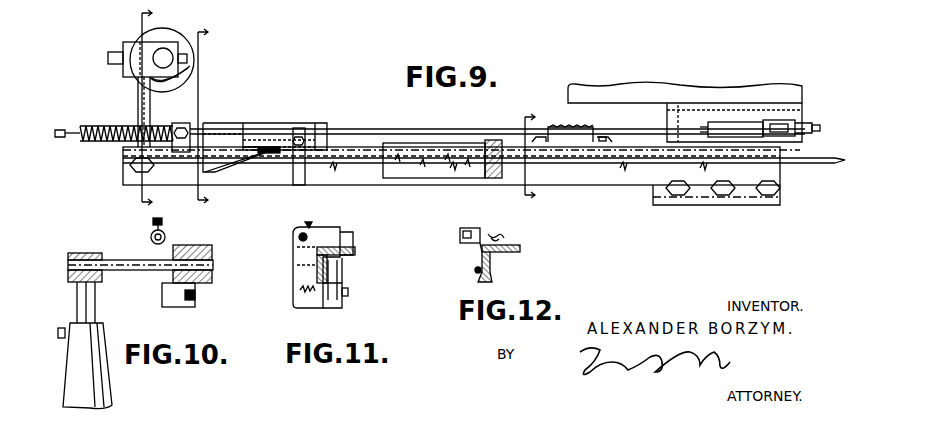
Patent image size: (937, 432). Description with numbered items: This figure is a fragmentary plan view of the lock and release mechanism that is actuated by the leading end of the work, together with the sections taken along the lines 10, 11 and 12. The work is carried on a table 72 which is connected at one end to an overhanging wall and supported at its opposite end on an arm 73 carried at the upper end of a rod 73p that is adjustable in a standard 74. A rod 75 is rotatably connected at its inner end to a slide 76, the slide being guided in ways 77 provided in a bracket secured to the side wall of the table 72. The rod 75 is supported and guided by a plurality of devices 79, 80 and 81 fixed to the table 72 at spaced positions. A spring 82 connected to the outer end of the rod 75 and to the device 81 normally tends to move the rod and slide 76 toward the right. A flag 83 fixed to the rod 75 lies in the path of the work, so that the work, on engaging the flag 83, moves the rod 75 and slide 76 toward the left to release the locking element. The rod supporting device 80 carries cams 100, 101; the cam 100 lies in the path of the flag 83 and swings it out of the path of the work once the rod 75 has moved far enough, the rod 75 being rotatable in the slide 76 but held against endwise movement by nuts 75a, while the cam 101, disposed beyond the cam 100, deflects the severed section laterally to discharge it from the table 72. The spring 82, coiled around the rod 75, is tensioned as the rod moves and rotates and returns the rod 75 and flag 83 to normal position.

In FIG. 9, the section line 10— 10 is at (160, 109).
In FIG. 9, the section line 11— 11 is at (217, 117).
In FIG. 9, the section line 12— 12 is at (543, 156).
In FIG. 9, the table 72 is at (615, 174).
In FIG. 11, the table 72 is at (352, 255).
In FIG. 12, the table 72 is at (521, 249).
In FIG. 9, the arm 73 is at (138, 105).
In FIG. 10, the arm 73 is at (125, 264).
In FIG. 9, the rod 73p is at (172, 55).
In FIG. 10, the rod 73p is at (88, 300).
In FIG. 9, the standard 74 is at (188, 76).
In FIG. 10, the standard 74 is at (103, 330).
In FIG. 9, the rod 75 is at (398, 129).
In FIG. 12, the rod 75 is at (492, 236).
In FIG. 9, the nuts 75a is at (812, 127).
In FIG. 9, the slide 76 is at (786, 120).
In FIG. 9, the ways 77 is at (743, 122).
In FIG. 9, the rod supporting device 79 is at (590, 127).
In FIG. 12, the rod supporting device 79 is at (467, 243).
In FIG. 9, the rod supporting device 80 is at (272, 125).
In FIG. 11, the rod supporting device 80 is at (298, 283).
In FIG. 9, the rod supporting device 81 is at (182, 123).
In FIG. 10, the rod supporting device 81 is at (172, 307).
In FIG. 9, the spring 82 is at (104, 141).
In FIG. 10, the spring 82 is at (168, 234).
In FIG. 9, the flag 83 is at (300, 186).
In FIG. 11, the flag 83 is at (345, 242).
In FIG. 9, the cam 100 is at (264, 157).
In FIG. 9, the cam 101 is at (238, 158).